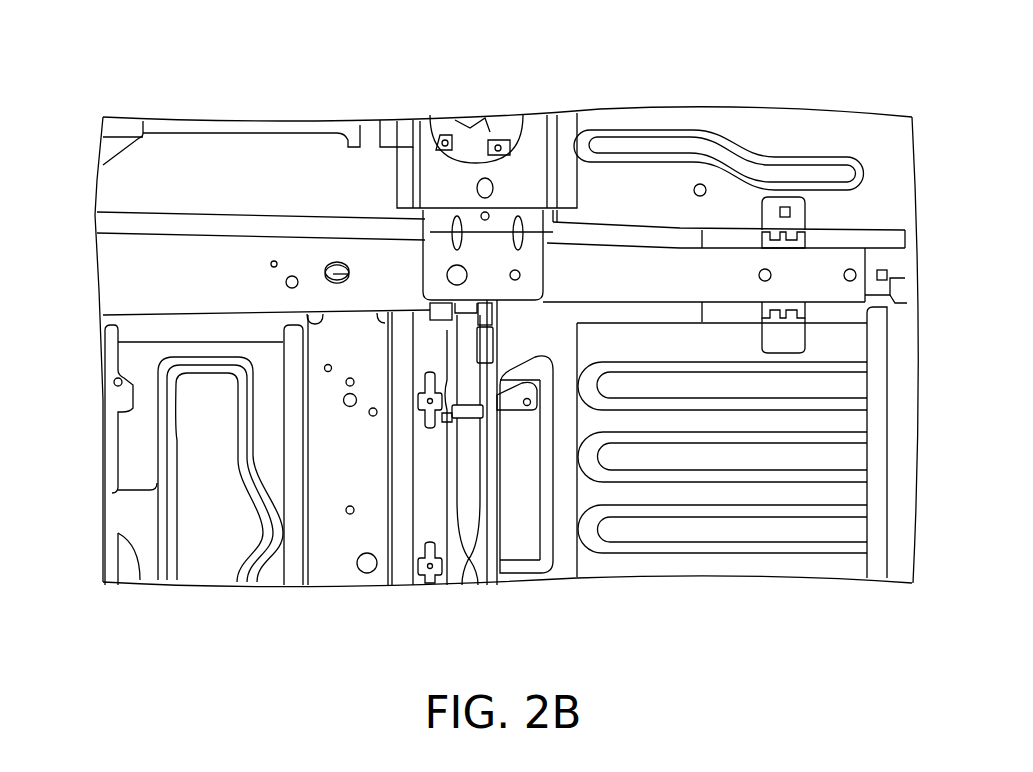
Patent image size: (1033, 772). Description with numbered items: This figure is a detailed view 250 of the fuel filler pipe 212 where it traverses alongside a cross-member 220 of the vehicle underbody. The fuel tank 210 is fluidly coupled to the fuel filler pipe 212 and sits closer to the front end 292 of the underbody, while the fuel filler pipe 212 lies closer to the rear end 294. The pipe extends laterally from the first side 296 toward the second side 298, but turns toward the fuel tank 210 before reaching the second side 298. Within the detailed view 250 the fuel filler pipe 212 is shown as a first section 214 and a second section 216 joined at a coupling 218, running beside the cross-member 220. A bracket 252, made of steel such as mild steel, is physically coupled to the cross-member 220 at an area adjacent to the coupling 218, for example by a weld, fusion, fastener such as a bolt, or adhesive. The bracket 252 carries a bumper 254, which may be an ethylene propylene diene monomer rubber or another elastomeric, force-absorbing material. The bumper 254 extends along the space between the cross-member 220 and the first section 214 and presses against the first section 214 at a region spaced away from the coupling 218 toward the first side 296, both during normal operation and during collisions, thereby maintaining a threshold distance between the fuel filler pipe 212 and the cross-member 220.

The fuel tank 210 is at (223, 568).
The fuel filler pipe 212 is at (447, 573).
The first section 214 is at (435, 313).
The second section 216 is at (478, 583).
The coupling 218 is at (452, 410).
The cross-member 220 is at (532, 545).
The detailed view 250 is at (777, 50).
The bracket 252 is at (525, 407).
The bumper 254 is at (490, 317).
The front end 292 is at (72, 352).
The rear end 294 is at (907, 252).
The first side 296 is at (473, 86).
The second side 298 is at (507, 593).